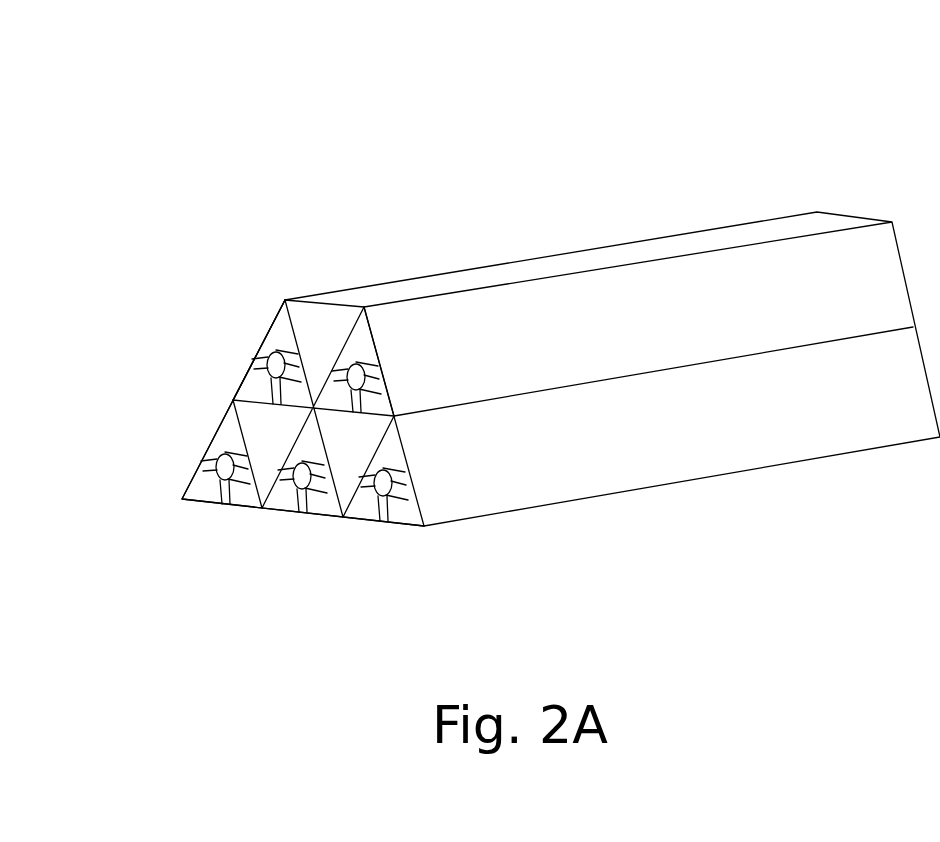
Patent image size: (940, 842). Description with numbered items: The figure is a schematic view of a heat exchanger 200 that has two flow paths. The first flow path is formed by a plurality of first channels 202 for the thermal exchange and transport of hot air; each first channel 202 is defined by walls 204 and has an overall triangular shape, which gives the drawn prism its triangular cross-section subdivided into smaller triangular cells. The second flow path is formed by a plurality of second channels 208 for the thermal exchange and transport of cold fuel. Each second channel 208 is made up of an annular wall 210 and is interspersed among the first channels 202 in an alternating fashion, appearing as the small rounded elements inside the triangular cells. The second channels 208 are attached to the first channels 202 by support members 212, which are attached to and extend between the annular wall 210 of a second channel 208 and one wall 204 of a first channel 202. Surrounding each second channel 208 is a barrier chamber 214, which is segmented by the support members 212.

The heat exchanger 200 is at (814, 150).
The first channel 202 is at (265, 448).
The wall 204 is at (293, 331).
The second channel 208 is at (228, 480).
The annular wall 210 is at (354, 362).
The support member 212 is at (372, 515).
The barrier chamber 214 is at (280, 312).